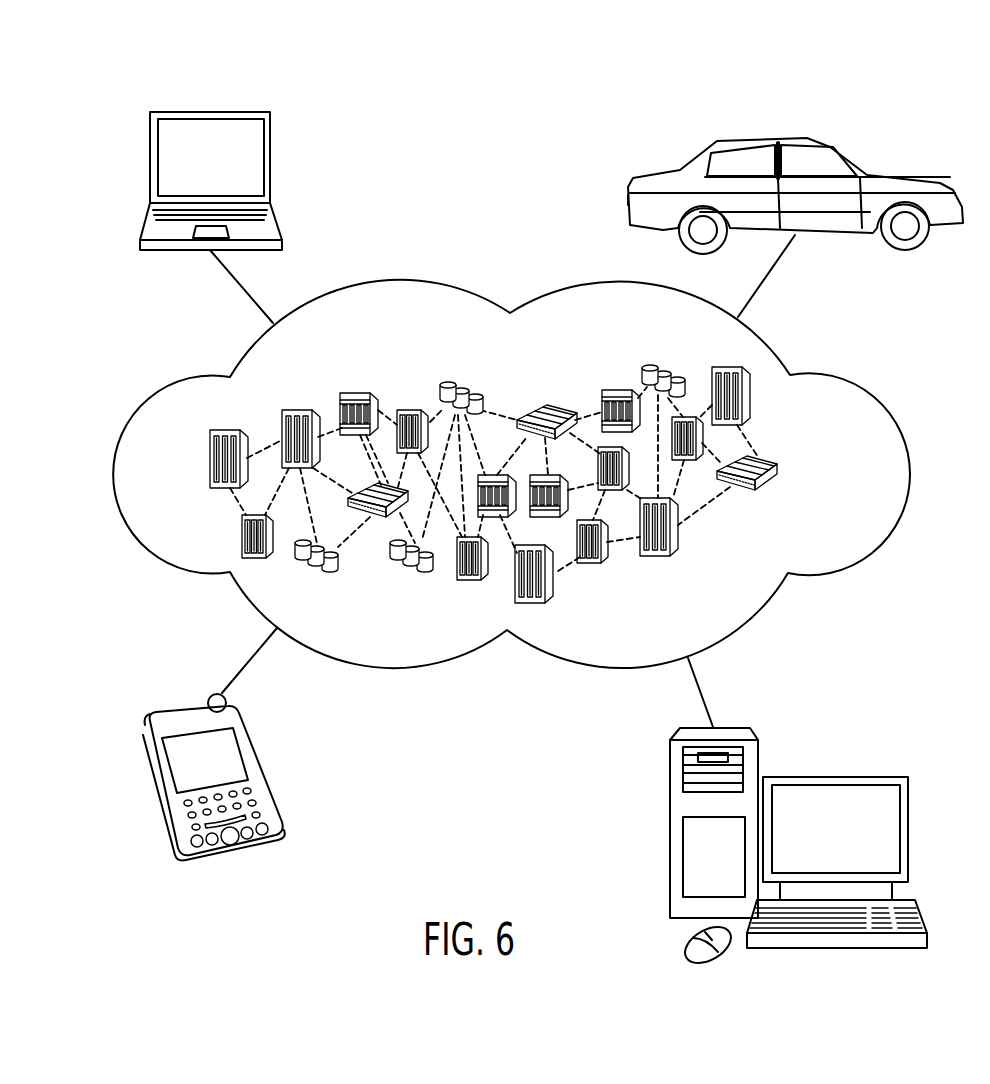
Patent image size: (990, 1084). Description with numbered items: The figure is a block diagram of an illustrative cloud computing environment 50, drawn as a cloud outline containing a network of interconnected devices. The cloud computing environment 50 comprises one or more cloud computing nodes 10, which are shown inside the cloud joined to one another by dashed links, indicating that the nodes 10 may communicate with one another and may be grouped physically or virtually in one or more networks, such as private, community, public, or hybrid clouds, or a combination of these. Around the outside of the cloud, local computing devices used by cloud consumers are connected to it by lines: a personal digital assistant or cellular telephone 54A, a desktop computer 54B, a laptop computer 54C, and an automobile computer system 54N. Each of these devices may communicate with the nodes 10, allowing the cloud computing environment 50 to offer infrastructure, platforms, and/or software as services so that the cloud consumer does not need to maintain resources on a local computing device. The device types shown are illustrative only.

The cloud computing node 10 is at (790, 474).
The cloud computing environment 50 is at (848, 380).
The personal digital assistant or cellular telephone 54A is at (190, 712).
The desktop computer 54B is at (833, 777).
The laptop computer 54C is at (210, 111).
The automobile computer system 54N is at (771, 137).